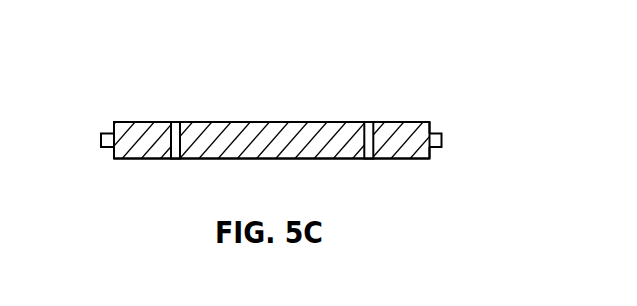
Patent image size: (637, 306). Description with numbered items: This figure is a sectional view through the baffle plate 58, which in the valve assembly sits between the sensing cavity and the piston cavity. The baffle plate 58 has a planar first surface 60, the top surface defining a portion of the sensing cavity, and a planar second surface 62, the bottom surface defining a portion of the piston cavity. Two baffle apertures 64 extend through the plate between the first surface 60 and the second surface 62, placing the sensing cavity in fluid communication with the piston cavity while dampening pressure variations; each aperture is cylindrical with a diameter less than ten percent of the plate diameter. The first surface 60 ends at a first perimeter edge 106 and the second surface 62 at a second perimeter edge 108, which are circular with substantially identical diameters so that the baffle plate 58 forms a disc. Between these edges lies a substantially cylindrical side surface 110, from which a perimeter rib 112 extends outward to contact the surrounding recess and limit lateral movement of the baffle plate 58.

The baffle plate 58 is at (243, 80).
The first surface 60 is at (316, 127).
The second surface 62 is at (401, 159).
The baffle aperture 64 is at (176, 108).
The first perimeter edge 106 is at (112, 122).
The second perimeter edge 108 is at (113, 159).
The side surface 110 is at (431, 123).
The perimeter rib 112 is at (442, 139).